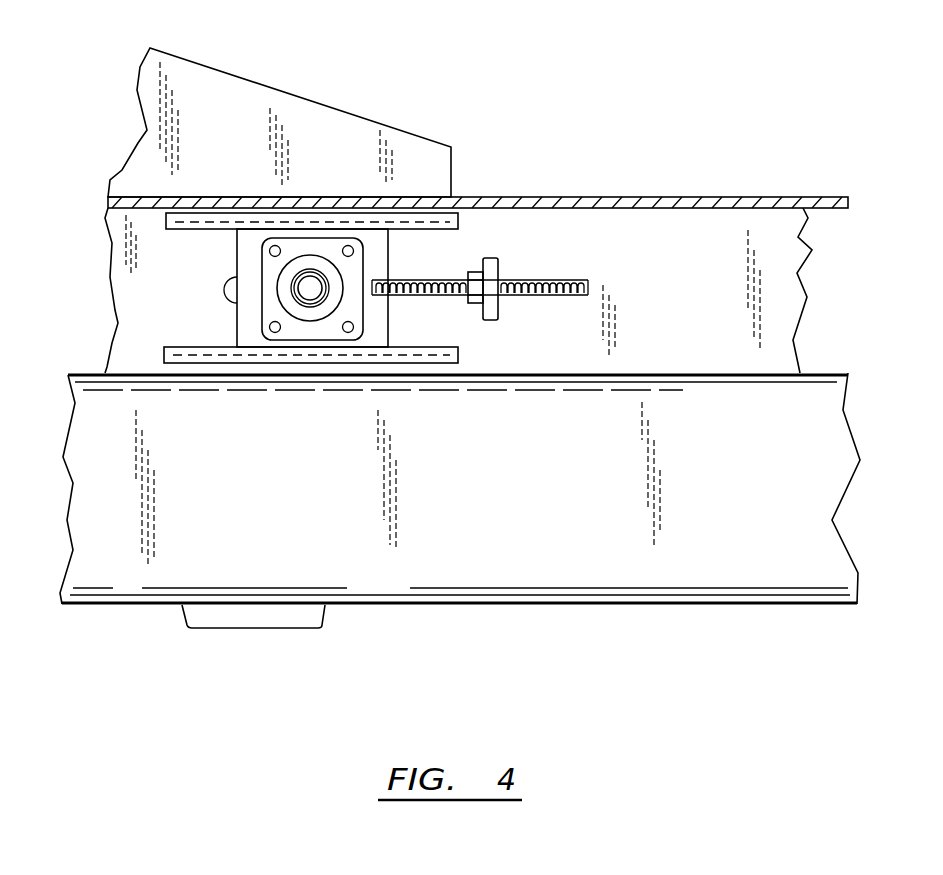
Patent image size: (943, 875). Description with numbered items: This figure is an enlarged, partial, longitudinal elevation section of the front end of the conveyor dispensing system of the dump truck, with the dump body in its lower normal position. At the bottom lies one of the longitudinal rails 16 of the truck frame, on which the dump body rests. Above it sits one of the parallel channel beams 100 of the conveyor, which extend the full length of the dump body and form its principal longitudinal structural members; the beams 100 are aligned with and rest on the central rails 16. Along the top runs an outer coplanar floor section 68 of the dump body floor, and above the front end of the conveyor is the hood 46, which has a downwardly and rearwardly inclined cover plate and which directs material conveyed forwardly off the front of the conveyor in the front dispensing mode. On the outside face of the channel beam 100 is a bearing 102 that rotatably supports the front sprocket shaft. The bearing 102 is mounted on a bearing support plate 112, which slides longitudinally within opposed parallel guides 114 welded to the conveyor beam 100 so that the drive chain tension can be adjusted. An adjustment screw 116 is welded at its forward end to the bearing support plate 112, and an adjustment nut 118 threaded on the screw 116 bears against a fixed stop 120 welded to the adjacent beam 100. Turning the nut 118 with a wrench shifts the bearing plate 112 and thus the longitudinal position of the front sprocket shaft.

The longitudinal beams or rails 16 is at (512, 497).
The hood 46 is at (314, 122).
The outer coplanar sections of the dump body floor 68 is at (668, 197).
The channel beams 100 is at (718, 296).
The bearings 102 is at (283, 278).
The bearing support plates 112 is at (245, 326).
The guides 114 is at (458, 221).
The adjustment screw 116 is at (570, 277).
The adjustment nut 118 is at (470, 303).
The fixed stop 120 is at (498, 303).